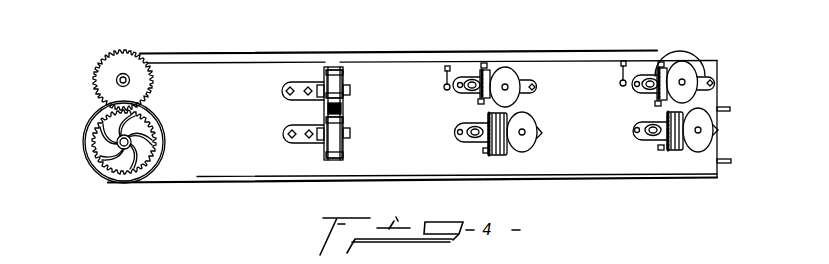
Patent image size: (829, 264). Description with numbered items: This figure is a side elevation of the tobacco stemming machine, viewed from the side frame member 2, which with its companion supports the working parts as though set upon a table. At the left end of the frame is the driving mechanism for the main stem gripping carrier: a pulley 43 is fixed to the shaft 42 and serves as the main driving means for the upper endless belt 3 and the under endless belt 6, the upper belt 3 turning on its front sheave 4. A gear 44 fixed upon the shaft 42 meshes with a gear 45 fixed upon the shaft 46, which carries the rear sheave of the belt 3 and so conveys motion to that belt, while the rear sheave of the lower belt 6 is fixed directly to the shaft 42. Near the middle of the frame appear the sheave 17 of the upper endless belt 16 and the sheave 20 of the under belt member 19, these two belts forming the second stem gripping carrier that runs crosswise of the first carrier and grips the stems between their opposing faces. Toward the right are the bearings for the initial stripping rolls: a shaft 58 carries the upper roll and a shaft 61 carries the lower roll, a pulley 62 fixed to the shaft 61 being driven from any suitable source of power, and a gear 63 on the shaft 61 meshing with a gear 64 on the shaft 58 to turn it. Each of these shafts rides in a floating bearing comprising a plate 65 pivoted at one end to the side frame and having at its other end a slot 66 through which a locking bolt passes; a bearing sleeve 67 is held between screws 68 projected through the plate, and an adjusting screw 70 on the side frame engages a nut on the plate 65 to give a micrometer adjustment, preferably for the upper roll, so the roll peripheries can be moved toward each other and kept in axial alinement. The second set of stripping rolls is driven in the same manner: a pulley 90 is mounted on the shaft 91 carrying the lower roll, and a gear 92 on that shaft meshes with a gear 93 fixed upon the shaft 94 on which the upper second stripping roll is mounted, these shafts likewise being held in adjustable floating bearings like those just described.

The side member 2 is at (252, 176).
The upper endless belt 3 is at (338, 51).
The front sheave 4 is at (680, 45).
The under endless belt member 6 is at (731, 163).
The upper endless belt 16 is at (343, 101).
The sheave 17 is at (344, 73).
The under belt member 19 is at (345, 114).
The sheave 20 is at (344, 151).
The shaft 42 is at (128, 139).
The pulley 43 is at (160, 165).
The gear 44 is at (142, 142).
The gear 45 is at (146, 88).
The shaft 46 is at (121, 77).
The shaft 58 is at (703, 62).
The shaft 61 is at (702, 130).
The pulley 62 is at (706, 116).
The gear 63 is at (674, 152).
The gear 64 is at (683, 80).
The plate 65 is at (455, 134).
The slot 66 is at (458, 82).
The bearing sleeve 67 is at (470, 79).
The screws 68 is at (484, 66).
The adjusting screw 70 is at (446, 68).
The pulley 90 is at (534, 140).
The shaft 91 is at (524, 132).
The gear 92 is at (492, 152).
The gear 93 is at (508, 72).
The shaft 94 is at (512, 88).